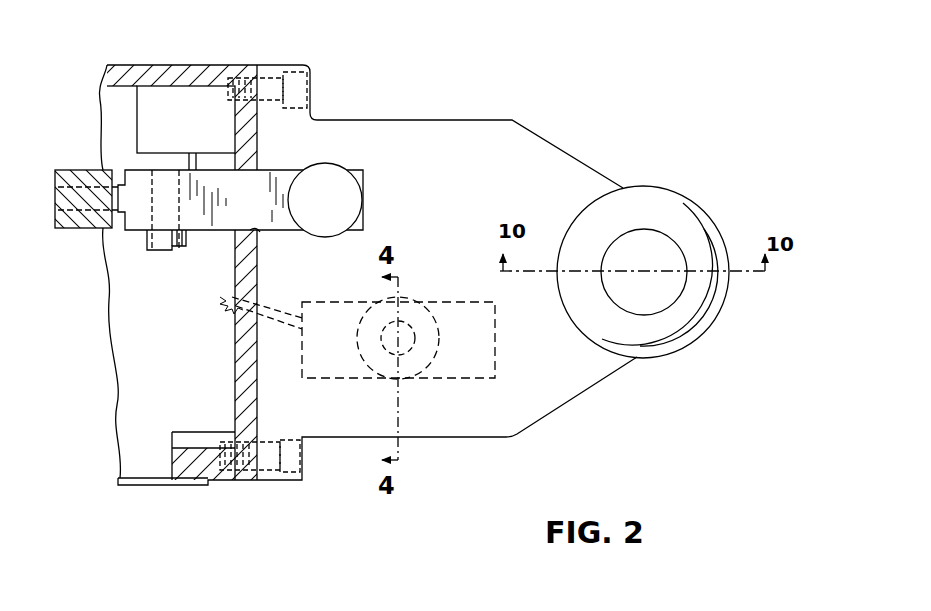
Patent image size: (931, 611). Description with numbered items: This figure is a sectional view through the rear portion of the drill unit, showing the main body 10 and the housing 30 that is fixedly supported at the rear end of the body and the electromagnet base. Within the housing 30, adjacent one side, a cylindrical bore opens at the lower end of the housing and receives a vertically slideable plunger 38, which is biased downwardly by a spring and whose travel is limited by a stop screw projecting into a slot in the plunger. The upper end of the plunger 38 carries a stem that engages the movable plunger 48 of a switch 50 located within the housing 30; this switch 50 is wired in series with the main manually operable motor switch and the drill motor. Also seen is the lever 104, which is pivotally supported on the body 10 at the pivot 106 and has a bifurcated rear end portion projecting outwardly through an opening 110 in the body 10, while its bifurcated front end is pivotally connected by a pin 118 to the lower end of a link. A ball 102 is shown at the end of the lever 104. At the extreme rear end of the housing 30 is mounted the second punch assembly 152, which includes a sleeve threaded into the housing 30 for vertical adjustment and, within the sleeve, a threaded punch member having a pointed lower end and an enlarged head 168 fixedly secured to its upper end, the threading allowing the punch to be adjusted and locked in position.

The main body 10 is at (355, 263).
The housing 30 is at (492, 446).
The plunger 38 is at (438, 318).
The movable plunger 48 is at (410, 323).
The switch 50 is at (499, 352).
The ball 102 is at (356, 190).
The lever 104 is at (265, 172).
The pivot 106 is at (160, 250).
The opening 110 is at (257, 232).
The pin 118 is at (83, 230).
The second punch assembly 152 is at (722, 226).
The enlarged head 168 is at (678, 197).